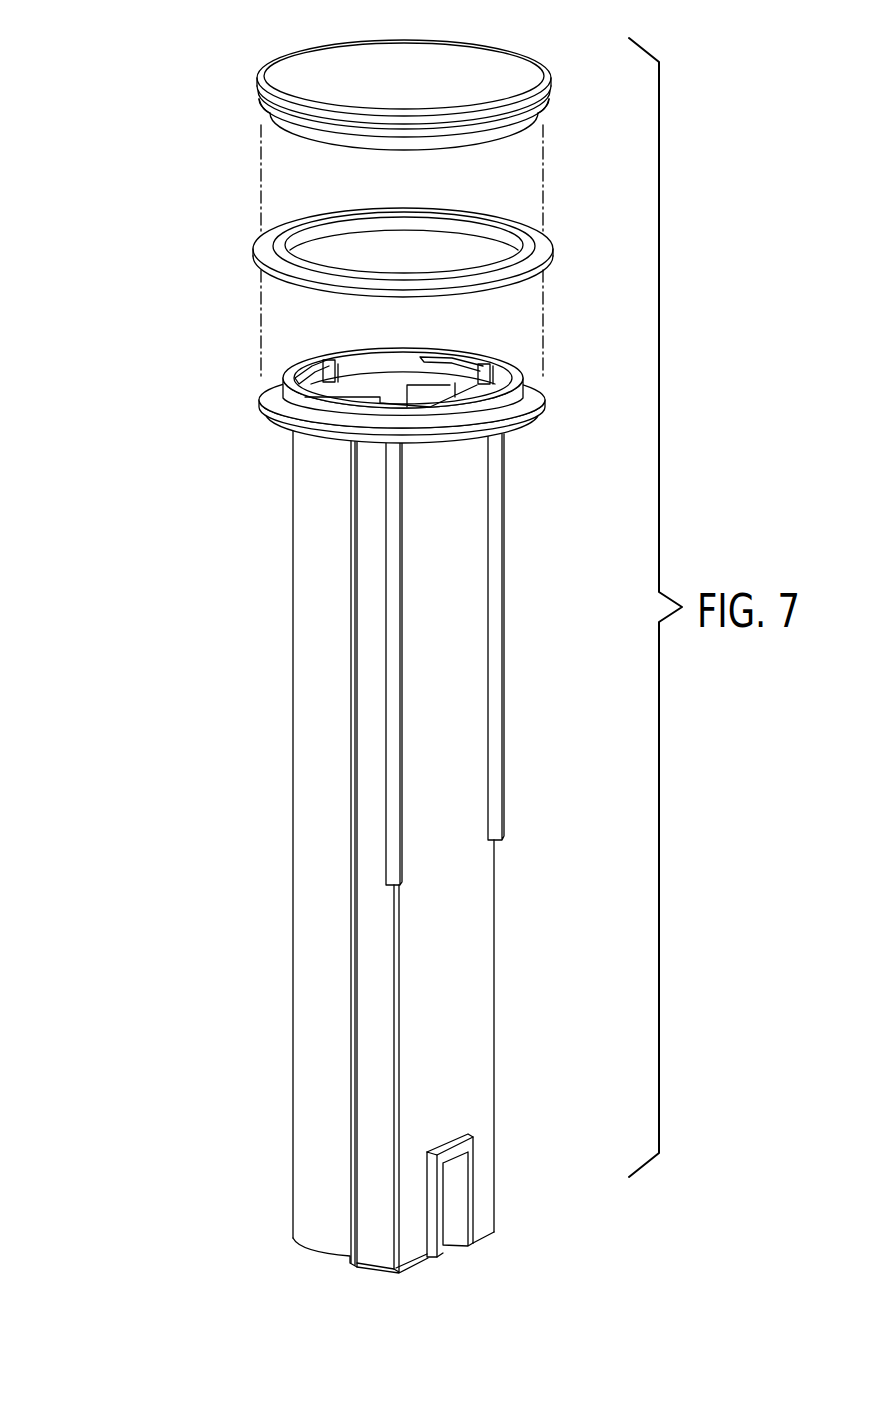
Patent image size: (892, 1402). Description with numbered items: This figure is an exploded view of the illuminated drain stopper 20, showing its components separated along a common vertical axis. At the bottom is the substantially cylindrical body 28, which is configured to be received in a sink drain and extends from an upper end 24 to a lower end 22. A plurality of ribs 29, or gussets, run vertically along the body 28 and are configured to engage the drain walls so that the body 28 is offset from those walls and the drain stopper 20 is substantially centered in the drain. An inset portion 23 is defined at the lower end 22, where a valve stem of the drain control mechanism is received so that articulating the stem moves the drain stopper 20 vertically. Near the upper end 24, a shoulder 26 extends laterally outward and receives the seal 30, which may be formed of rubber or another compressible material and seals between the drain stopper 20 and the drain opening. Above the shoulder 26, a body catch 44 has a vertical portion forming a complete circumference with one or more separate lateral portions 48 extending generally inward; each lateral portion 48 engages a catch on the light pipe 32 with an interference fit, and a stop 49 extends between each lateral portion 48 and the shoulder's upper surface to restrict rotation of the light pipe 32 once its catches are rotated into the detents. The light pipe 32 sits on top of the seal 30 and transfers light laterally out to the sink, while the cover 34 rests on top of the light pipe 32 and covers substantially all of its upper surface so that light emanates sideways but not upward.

The drain stopper 20 is at (337, 636).
The lower end 22 is at (390, 852).
The inset portion 23 is at (455, 1204).
The upper end 24 is at (375, 784).
The shoulder 26 is at (431, 379).
The body 28 is at (477, 957).
The ribs 29 is at (393, 634).
The seal 30 is at (487, 218).
The light pipe 32 is at (540, 120).
The cover 34 is at (422, 82).
The body catch 44 is at (292, 361).
The lateral portions 48 is at (307, 372).
The stop 49 is at (362, 352).